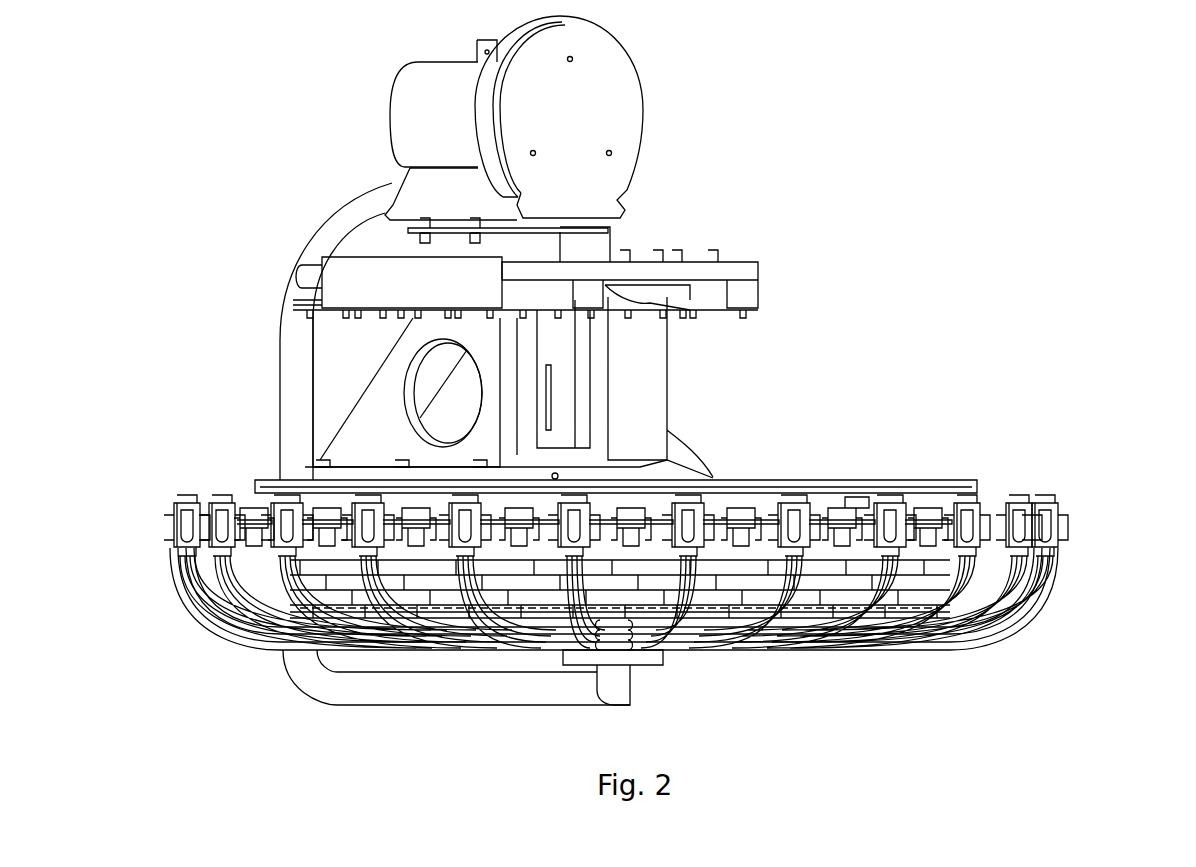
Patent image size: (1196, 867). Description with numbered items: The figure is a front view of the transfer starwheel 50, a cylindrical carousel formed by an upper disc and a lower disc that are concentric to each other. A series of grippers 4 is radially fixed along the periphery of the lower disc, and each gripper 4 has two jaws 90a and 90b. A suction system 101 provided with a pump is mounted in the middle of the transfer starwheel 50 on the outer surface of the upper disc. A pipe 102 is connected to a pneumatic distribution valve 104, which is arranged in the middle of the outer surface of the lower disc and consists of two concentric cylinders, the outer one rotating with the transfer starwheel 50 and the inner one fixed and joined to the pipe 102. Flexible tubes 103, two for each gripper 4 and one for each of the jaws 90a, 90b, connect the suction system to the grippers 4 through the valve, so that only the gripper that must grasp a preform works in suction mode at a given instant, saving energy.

The transfer starwheel 50 is at (900, 265).
The suction system 101 is at (407, 178).
The pipe 102 is at (292, 397).
The gripper 4 is at (857, 502).
The jaw 90a is at (185, 522).
The jaw 90b is at (1045, 518).
The flexible tube 103 is at (1045, 600).
The pneumatic distribution valve 104 is at (635, 657).